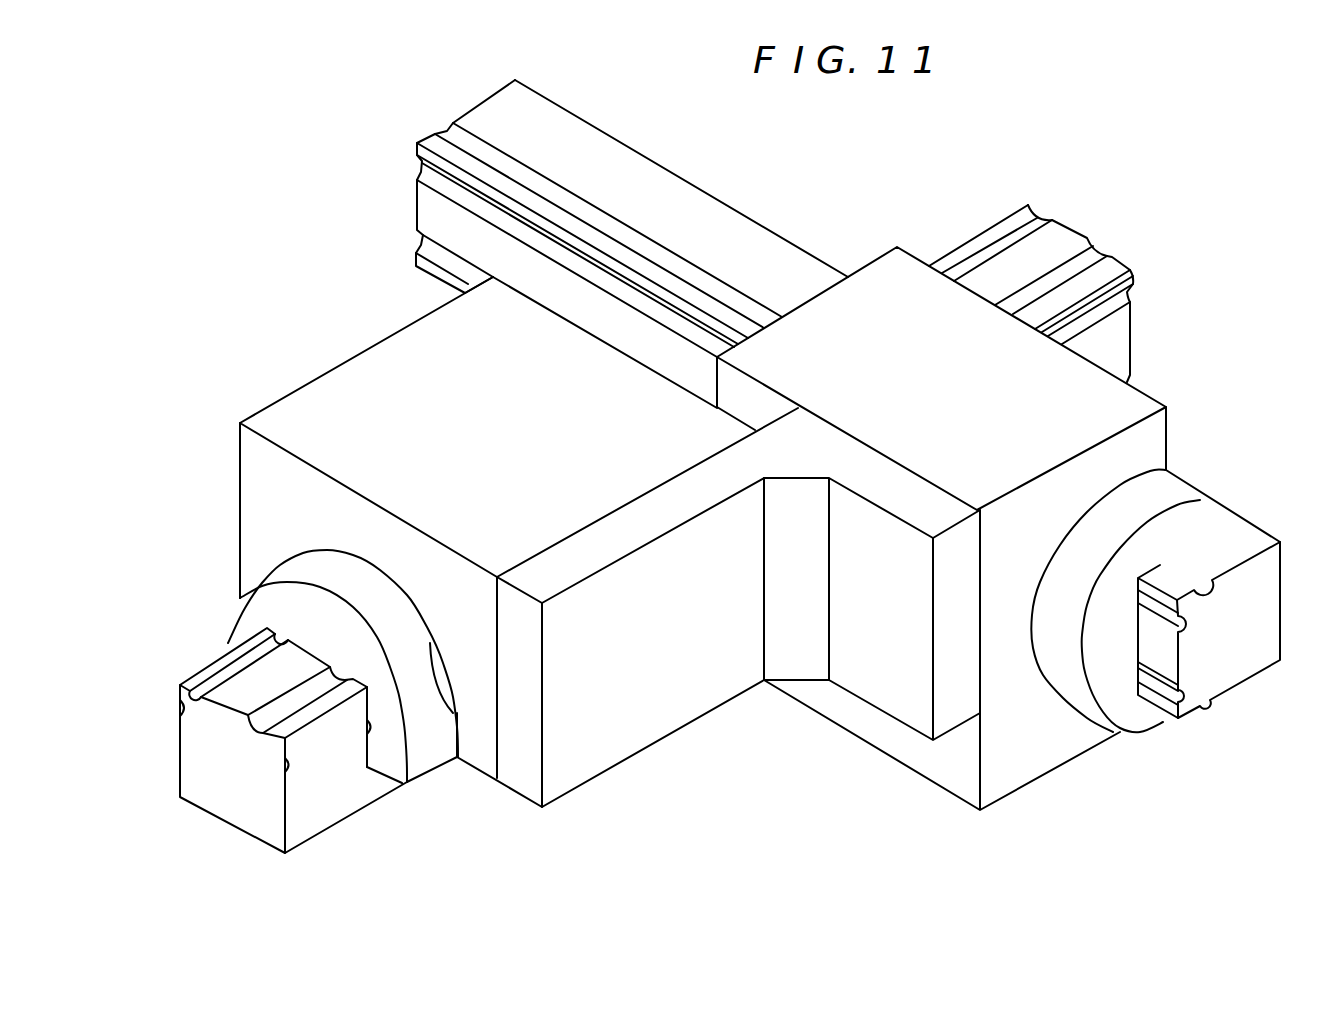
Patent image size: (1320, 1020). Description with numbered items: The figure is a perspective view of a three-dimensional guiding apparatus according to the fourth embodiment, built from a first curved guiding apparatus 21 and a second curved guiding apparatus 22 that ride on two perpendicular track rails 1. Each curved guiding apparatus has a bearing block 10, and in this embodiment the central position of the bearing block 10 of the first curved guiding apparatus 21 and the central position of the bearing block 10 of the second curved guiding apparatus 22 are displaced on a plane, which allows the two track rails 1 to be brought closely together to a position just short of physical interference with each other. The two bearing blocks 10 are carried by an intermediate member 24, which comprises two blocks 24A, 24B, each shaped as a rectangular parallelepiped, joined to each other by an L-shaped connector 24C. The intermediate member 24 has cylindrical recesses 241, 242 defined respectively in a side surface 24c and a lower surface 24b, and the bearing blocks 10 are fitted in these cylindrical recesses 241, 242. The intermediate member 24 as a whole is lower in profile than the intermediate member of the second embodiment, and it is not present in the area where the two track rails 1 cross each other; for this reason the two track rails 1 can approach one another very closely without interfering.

The track rail 1 is at (693, 230).
The bearing block 10 is at (425, 728).
The first curved guiding apparatus 21 is at (263, 575).
The second curved guiding apparatus 22 is at (1196, 483).
The intermediate member 24 is at (316, 367).
The block 24A is at (386, 381).
The block 24B is at (1108, 417).
The L-shaped connector 24C is at (694, 693).
The lower surface 24b is at (470, 770).
The side surface 24c is at (1166, 440).
The cylindrical recess 241 is at (1040, 578).
The cylindrical recess 242 is at (441, 652).